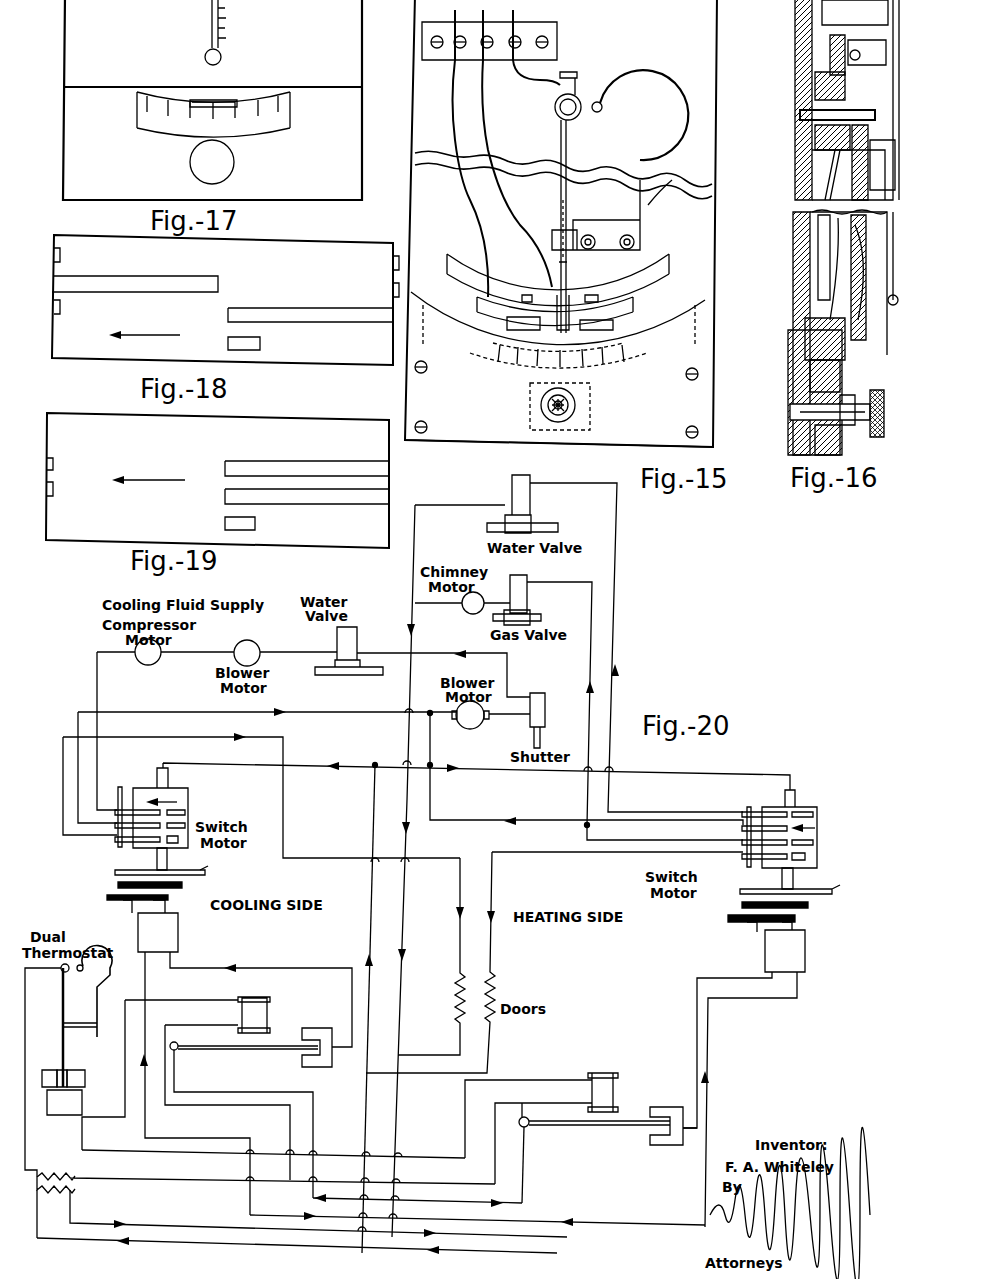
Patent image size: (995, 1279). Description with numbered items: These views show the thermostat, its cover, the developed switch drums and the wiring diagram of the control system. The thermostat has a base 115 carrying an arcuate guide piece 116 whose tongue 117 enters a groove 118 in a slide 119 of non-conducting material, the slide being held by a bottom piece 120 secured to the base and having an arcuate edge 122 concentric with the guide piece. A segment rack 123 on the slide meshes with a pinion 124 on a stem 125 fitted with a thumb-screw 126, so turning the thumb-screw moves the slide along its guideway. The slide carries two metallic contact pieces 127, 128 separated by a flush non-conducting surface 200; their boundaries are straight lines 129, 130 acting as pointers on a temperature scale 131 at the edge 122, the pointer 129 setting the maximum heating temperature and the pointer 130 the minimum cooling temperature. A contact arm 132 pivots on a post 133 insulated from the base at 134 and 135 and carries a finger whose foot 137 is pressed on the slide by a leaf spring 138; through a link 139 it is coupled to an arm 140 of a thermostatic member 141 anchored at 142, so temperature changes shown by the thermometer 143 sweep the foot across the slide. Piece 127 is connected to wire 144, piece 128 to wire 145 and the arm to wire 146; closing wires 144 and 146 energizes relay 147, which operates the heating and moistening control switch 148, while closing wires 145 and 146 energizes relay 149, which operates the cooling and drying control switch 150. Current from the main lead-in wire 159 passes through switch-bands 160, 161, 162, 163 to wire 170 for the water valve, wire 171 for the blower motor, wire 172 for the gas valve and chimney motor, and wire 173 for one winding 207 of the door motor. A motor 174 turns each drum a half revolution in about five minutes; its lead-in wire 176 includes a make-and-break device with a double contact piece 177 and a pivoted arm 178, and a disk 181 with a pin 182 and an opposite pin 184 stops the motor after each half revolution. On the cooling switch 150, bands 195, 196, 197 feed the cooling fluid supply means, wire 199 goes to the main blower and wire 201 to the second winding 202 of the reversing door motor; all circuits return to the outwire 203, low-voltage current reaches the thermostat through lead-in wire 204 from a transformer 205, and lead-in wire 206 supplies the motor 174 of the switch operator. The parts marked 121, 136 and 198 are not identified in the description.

In FIG. 15, the base 115 is at (418, 0).
In FIG. 16, the base 115 is at (795, 8).
In FIG. 15, the arcuate guide piece 116 is at (660, 265).
In FIG. 16, the arcuate guide piece 116 is at (812, 298).
In FIG. 16, the tongue 117 is at (805, 332).
In FIG. 15, the groove 118 is at (672, 278).
In FIG. 16, the groove 118 is at (800, 322).
In FIG. 15, the slide 119 is at (447, 292).
In FIG. 16, the slide 119 is at (805, 348).
In FIG. 17, the bottom piece 120 is at (350, 55).
In FIG. 15, the bottom piece 120 is at (478, 430).
In FIG. 16, the bottom piece 120 is at (790, 448).
In FIG. 15, the screws 121 is at (690, 380).
In FIG. 15, the arcuate edge 122 is at (672, 318).
In FIG. 16, the arcuate edge 122 is at (842, 372).
In FIG. 15, the segment rack 123 is at (478, 365).
In FIG. 16, the segment rack 123 is at (800, 390).
In FIG. 15, the pinion 124 is at (533, 393).
In FIG. 16, the pinion 124 is at (795, 428).
In FIG. 15, the stem 125 is at (560, 425).
In FIG. 16, the stem 125 is at (790, 412).
In FIG. 17, the thumb-screw 126 is at (224, 163).
In FIG. 15, the thumb-screw 126 is at (540, 405).
In FIG. 16, the thumb-screw 126 is at (870, 430).
In FIG. 15, the contact piece 127 is at (633, 318).
In FIG. 20, the contact piece 127 is at (80, 1083).
In FIG. 15, the contact piece 128 is at (480, 306).
In FIG. 20, the contact piece 128 is at (45, 1070).
In FIG. 17, the pointer line 129 is at (240, 100).
In FIG. 15, the pointer line 129 is at (635, 325).
In FIG. 17, the pointer line 130 is at (183, 100).
In FIG. 15, the pointer line 130 is at (492, 322).
In FIG. 17, the scale 131 is at (173, 133).
In FIG. 15, the contact arm 132 is at (560, 133).
In FIG. 16, the contact arm 132 is at (800, 190).
In FIG. 15, the post 133 is at (572, 95).
In FIG. 16, the post 133 is at (800, 160).
In FIG. 16, the insulation 134 is at (800, 90).
In FIG. 16, the insulation 135 is at (800, 130).
In FIG. 15, the contact 136 is at (600, 300).
In FIG. 16, the contact 136 is at (858, 345).
In FIG. 16, the foot 137 is at (860, 375).
In FIG. 20, the foot 137 is at (62, 1072).
In FIG. 15, the leaf spring 138 is at (575, 262).
In FIG. 16, the leaf spring 138 is at (893, 306).
In FIG. 15, the link 139 is at (608, 230).
In FIG. 15, the arm 140 is at (669, 188).
In FIG. 20, the arm 140 is at (99, 1010).
In FIG. 15, the thermostatic member 141 is at (672, 68).
In FIG. 20, the thermostatic member 141 is at (112, 972).
In FIG. 15, the anchorage 142 is at (602, 107).
In FIG. 17, the thermometer 143 is at (220, 23).
In FIG. 15, the wire 144 is at (487, 112).
In FIG. 20, the wire 144 is at (102, 1135).
In FIG. 15, the wire 145 is at (457, 92).
In FIG. 20, the wire 145 is at (42, 1100).
In FIG. 15, the wire 146 is at (548, 76).
In FIG. 20, the wire 146 is at (522, 1103).
In FIG. 20, the relay 147 is at (613, 1090).
In FIG. 18, the heating and moistening control switch 148 is at (318, 243).
In FIG. 20, the heating and moistening control switch 148 is at (817, 815).
In FIG. 20, the relay 149 is at (270, 1012).
In FIG. 19, the cooling and drying control switch 150 is at (78, 426).
In FIG. 20, the cooling and drying control switch 150 is at (135, 788).
In FIG. 20, the main lead-in wire 159 is at (557, 1254).
In FIG. 18, the switch-band 160 is at (385, 262).
In FIG. 18, the switch-band 161 is at (385, 293).
In FIG. 18, the switch-band 162 is at (318, 335).
In FIG. 18, the switch-band 163 is at (260, 344).
In FIG. 20, the wire 170 is at (710, 812).
In FIG. 20, the wire 171 is at (637, 825).
In FIG. 20, the wire 172 is at (604, 855).
In FIG. 20, the wire 173 is at (556, 846).
In FIG. 20, the motor 174 is at (805, 962).
In FIG. 20, the lead-in wire 176 is at (524, 1176).
In FIG. 20, the double contact piece 177 is at (655, 1145).
In FIG. 20, the pivoted arm 178 is at (585, 1130).
In FIG. 20, the disk 181 is at (815, 888).
In FIG. 20, the pin 182 is at (834, 890).
In FIG. 20, the pin 184 is at (740, 892).
In FIG. 19, the switch band 195 is at (246, 462).
In FIG. 20, the switch band 195 is at (185, 812).
In FIG. 19, the switch band 196 is at (330, 516).
In FIG. 20, the switch band 196 is at (185, 825).
In FIG. 19, the switch band 197 is at (255, 524).
In FIG. 20, the switch band 197 is at (178, 843).
In FIG. 20, the conductor 198 is at (63, 745).
In FIG. 20, the wire 199 is at (78, 718).
In FIG. 15, the non-conducting surface 200 is at (545, 300).
In FIG. 20, the non-conducting surface 200 is at (64, 1102).
In FIG. 20, the wire 201 is at (63, 773).
In FIG. 20, the second winding 202 is at (455, 985).
In FIG. 20, the outwire 203 is at (567, 1238).
In FIG. 20, the lead-in wire 204 is at (180, 1240).
In FIG. 20, the transformer 205 is at (74, 1186).
In FIG. 20, the lead-in wire 206 is at (252, 968).
In FIG. 20, the winding 207 is at (500, 978).